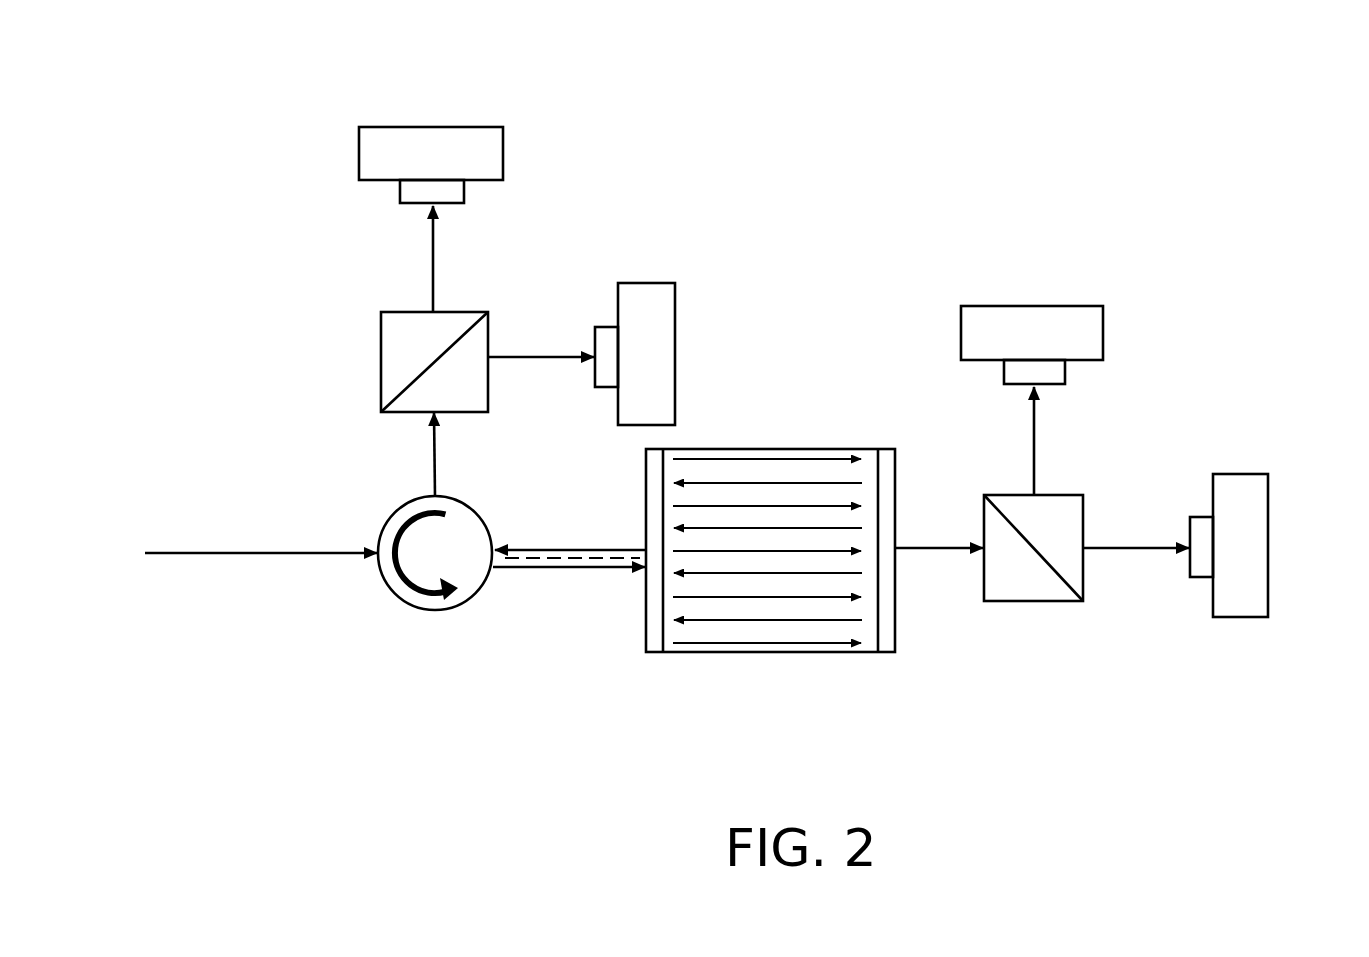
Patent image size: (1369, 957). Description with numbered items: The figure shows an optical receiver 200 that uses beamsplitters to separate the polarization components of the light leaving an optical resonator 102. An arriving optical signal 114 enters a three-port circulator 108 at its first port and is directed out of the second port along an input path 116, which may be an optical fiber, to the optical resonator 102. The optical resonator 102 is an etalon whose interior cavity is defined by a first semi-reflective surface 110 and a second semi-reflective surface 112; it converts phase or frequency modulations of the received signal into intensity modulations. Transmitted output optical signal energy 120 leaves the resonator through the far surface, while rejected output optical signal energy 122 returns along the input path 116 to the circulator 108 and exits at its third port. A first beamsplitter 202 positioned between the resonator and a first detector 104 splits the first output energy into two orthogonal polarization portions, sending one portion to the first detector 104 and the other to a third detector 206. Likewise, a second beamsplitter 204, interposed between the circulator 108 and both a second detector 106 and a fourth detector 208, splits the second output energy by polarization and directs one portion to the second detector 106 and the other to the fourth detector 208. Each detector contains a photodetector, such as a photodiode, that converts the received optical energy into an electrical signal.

The optical receiver 200 is at (858, 240).
The optical resonator 102 is at (869, 406).
The first detector 104 is at (1244, 474).
The second detector 106 is at (497, 127).
The circulator 108 is at (458, 504).
The first semi-reflective surface 110 is at (662, 449).
The second semi-reflective surface 112 is at (880, 449).
The optical signal 114 is at (278, 532).
The input path 116 is at (570, 569).
The transmitted output optical signal energy 120 is at (926, 524).
The rejected output optical signal energy 122 is at (571, 530).
The first beamsplitter 202 is at (1070, 495).
The second beamsplitter 204 is at (473, 312).
The third detector 206 is at (1100, 306).
The fourth detector 208 is at (650, 283).